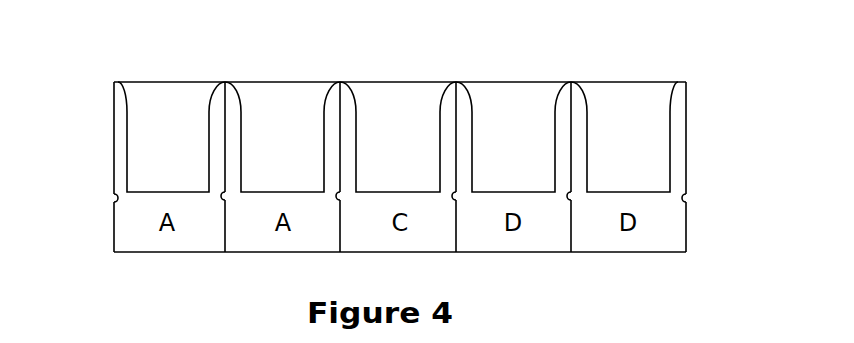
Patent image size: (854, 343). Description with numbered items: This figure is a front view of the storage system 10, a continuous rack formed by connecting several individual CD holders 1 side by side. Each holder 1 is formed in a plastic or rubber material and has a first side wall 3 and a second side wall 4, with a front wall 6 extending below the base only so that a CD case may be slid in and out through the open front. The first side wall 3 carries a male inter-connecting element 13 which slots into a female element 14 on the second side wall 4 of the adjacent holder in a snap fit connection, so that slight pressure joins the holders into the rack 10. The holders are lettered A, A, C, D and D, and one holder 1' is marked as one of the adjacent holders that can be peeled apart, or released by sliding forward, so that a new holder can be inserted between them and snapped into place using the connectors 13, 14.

The CD holder 1 is at (398, 96).
The holder 1' is at (282, 96).
The first side wall 3 is at (114, 140).
The second side wall 4 is at (686, 138).
The front wall 6 is at (643, 210).
The storage system 10 is at (707, 78).
The male inter-connecting element 13 is at (113, 198).
The female element 14 is at (689, 198).